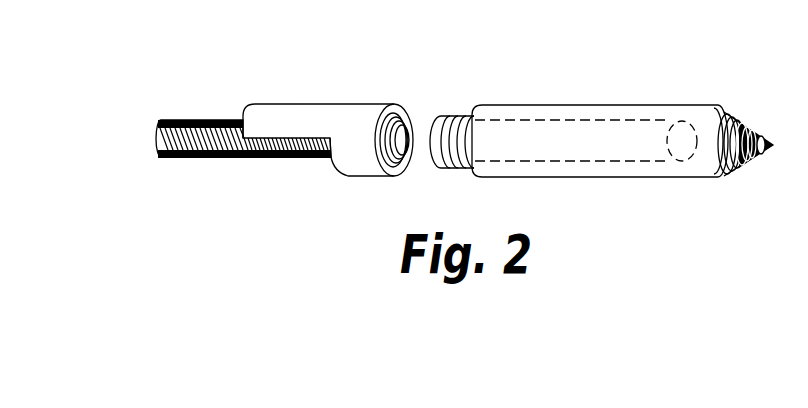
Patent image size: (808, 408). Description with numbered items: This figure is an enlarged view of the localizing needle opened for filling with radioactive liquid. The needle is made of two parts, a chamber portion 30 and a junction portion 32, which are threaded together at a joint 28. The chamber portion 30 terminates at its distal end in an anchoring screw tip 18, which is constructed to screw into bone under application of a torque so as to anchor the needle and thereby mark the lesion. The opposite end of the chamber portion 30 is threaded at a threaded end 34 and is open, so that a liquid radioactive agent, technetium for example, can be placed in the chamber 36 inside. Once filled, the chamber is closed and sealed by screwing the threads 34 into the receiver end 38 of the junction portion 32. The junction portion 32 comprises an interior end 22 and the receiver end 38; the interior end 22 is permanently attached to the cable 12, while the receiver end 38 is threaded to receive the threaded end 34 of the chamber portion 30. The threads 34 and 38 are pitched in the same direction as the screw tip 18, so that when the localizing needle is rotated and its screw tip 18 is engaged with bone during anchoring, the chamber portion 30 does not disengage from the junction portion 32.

The cable 12 is at (190, 120).
The interior end 22 is at (278, 114).
The junction portion 32 is at (352, 128).
The joint 28 is at (395, 113).
The receiver end 38 is at (403, 153).
The threaded end 34 is at (452, 115).
The chamber portion 30 is at (538, 113).
The chamber 36 is at (610, 118).
The anchoring screw tip 18 is at (740, 124).